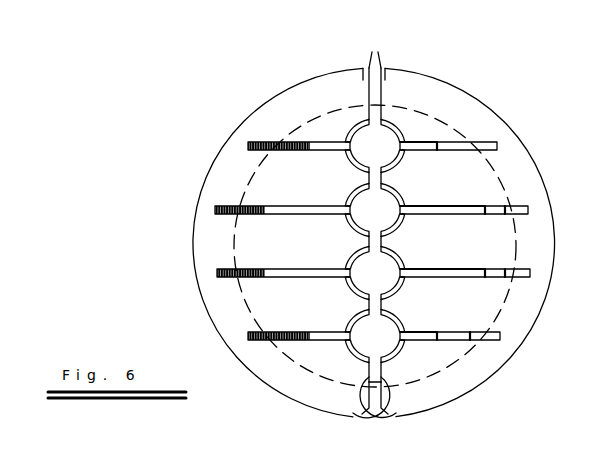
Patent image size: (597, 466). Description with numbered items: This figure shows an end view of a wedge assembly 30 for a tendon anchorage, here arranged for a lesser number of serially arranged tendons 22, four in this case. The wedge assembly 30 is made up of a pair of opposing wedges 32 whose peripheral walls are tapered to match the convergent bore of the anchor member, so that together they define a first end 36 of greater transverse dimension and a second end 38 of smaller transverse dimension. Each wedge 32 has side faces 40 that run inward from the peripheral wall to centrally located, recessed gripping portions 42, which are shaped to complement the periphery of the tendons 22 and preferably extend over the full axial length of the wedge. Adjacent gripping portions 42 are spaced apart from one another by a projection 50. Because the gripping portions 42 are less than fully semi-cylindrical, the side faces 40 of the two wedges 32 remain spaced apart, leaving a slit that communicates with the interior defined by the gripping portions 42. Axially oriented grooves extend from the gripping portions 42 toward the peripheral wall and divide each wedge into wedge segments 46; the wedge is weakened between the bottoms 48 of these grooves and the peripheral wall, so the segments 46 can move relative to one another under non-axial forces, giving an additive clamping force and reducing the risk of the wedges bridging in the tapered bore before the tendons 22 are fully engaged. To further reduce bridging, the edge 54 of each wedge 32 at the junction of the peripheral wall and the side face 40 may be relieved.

The tendons 22 is at (382, 270).
The wedge assembly 30 is at (510, 375).
The wedges 32 is at (438, 392).
The first end 36 is at (322, 106).
The second end 38 is at (246, 187).
The side faces 40 is at (362, 416).
The gripping portions 42 is at (392, 130).
The wedge segments 46 is at (495, 120).
The bottoms 48 is at (215, 210).
The projection 50 is at (388, 180).
The edge 54 is at (370, 60).